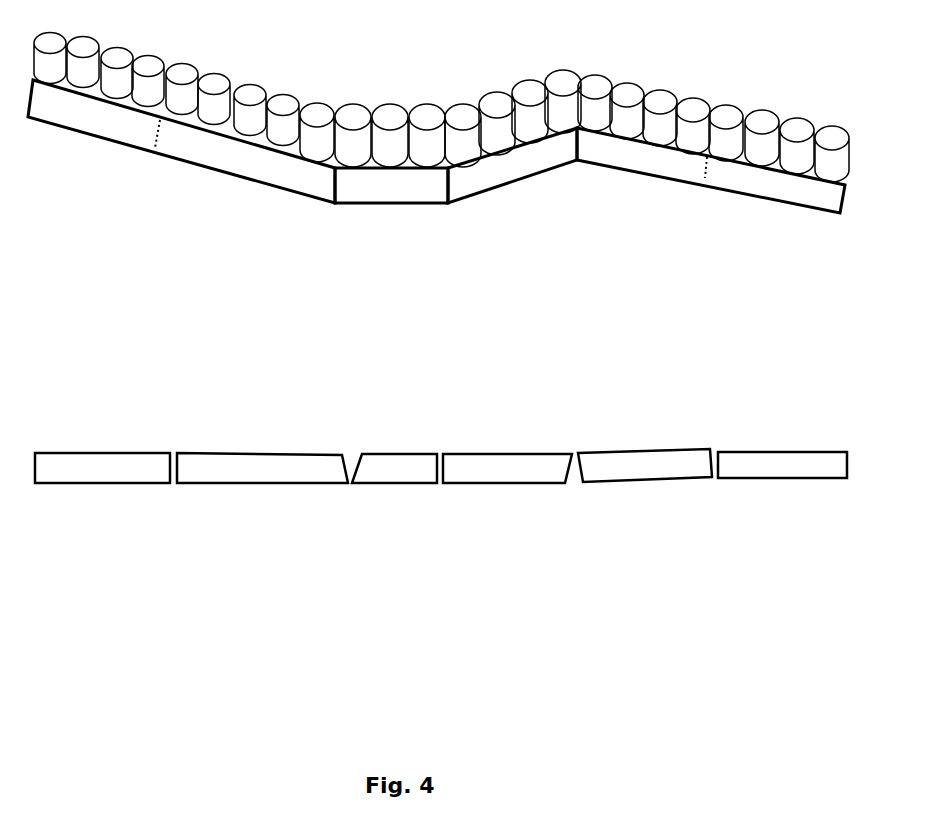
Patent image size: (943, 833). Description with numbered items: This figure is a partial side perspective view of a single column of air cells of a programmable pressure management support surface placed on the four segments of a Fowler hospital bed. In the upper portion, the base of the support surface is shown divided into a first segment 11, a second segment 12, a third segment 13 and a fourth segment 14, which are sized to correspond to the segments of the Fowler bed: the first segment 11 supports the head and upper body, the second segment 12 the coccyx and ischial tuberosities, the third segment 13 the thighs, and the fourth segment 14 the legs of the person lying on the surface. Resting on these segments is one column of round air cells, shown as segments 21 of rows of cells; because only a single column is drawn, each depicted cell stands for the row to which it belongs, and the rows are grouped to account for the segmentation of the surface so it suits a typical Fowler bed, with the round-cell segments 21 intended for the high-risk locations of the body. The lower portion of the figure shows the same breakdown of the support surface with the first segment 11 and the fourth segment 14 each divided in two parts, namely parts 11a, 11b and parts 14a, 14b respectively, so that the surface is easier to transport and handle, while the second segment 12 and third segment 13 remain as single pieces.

The first segment 11 is at (255, 172).
The first part of first segment 11a is at (103, 483).
The second part of first segment 11b is at (272, 483).
The second segment 12 is at (397, 207).
The third segment 13 is at (518, 182).
The fourth segment 14 is at (700, 190).
The first part of fourth segment 14a is at (643, 482).
The second part of fourth segment 14b is at (795, 482).
The segment of rows with round cells 21 is at (830, 165).